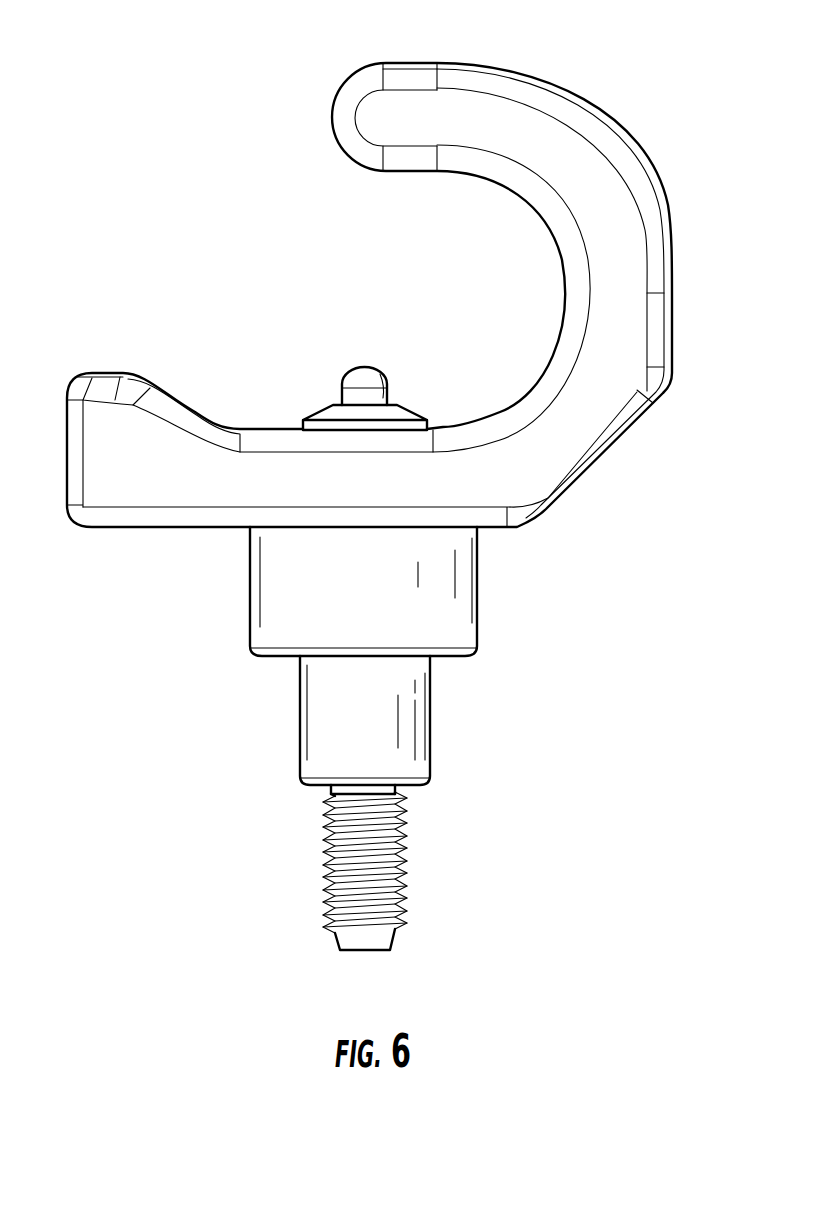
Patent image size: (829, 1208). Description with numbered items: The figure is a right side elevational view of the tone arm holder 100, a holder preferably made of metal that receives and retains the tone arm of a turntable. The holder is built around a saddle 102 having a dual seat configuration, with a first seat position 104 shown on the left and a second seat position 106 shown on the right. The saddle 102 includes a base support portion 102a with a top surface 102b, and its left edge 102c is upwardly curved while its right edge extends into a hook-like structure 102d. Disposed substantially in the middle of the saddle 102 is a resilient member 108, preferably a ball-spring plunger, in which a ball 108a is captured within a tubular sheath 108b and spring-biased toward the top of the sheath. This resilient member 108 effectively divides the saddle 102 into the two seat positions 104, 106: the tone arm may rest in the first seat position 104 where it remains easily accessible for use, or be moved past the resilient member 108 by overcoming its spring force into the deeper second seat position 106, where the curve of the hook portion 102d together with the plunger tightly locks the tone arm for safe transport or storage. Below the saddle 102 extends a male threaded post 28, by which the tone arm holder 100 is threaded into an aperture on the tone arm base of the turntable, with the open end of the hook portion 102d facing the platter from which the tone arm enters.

The tone arm holder 100 is at (551, 605).
The male threaded post 28 is at (390, 876).
The saddle 102 is at (376, 330).
The base support portion 102a is at (182, 483).
The top face of hook body 102b is at (273, 424).
The left edge 102c is at (107, 408).
The hook-like structure 102d is at (590, 195).
The first seat position 104 is at (368, 352).
The second seat position 106 is at (456, 306).
The resilient member 108 is at (531, 407).
The ball 108a is at (370, 393).
The tubular sheath 108b is at (400, 410).